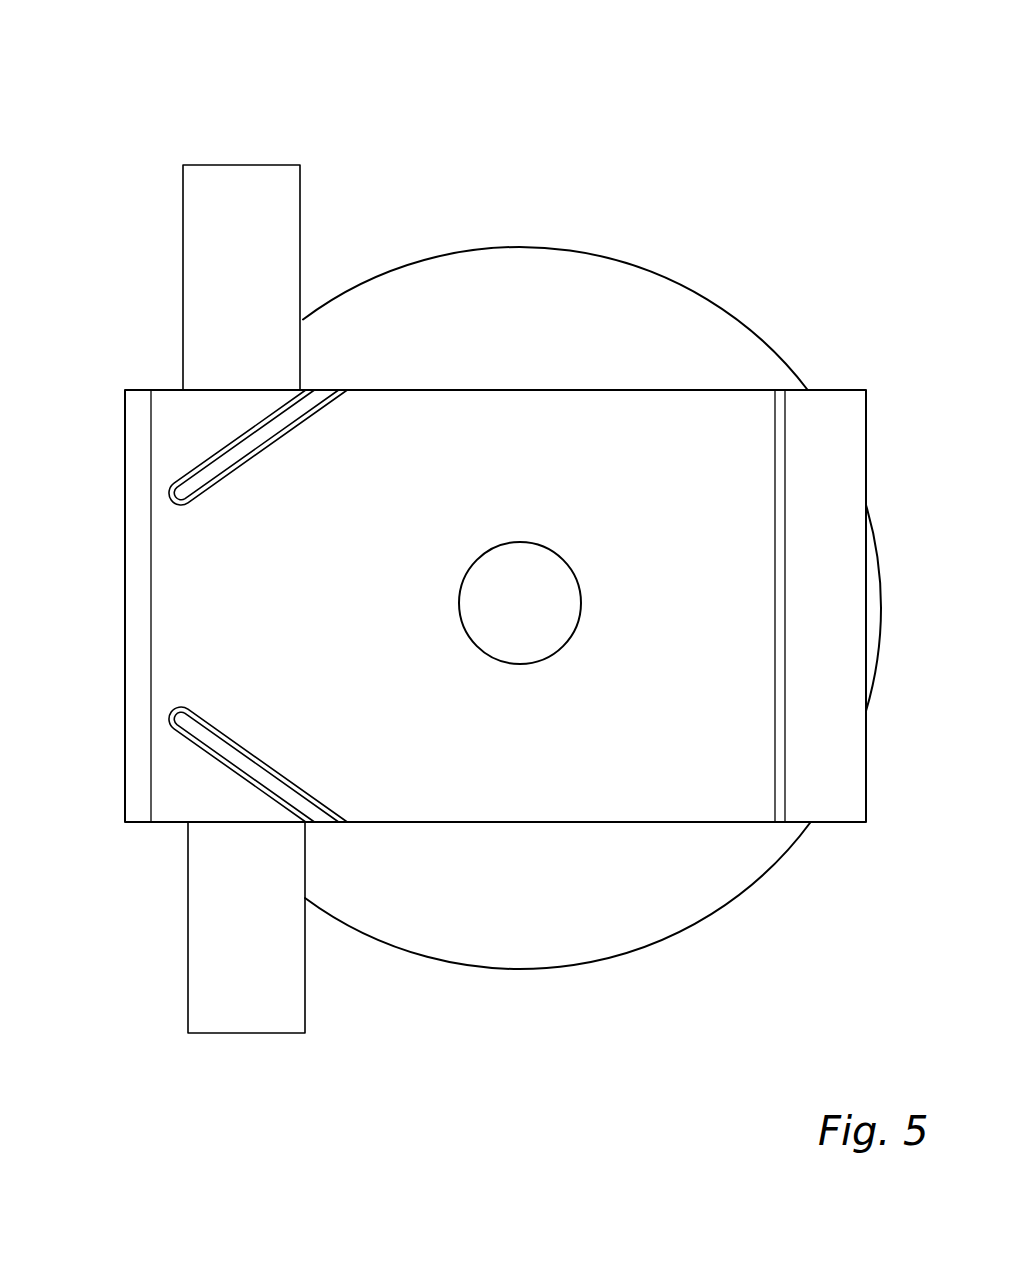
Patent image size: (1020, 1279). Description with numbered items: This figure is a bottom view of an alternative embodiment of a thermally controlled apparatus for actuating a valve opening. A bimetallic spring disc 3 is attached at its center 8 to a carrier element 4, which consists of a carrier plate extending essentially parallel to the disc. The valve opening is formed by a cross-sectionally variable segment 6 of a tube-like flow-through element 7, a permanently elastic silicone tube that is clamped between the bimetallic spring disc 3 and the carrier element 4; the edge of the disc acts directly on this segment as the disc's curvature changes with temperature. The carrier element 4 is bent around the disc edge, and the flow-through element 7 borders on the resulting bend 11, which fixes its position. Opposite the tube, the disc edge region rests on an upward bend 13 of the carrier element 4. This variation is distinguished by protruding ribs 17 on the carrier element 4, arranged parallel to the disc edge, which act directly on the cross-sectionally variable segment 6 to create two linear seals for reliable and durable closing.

The bimetallic spring disc 3 is at (568, 310).
The carrier element 4 is at (437, 440).
The cross-sectionally variable segment 6 is at (238, 735).
The flow-through element 7 is at (242, 190).
The center 8 is at (521, 603).
The bend 11 is at (137, 505).
The upward bend 13 is at (820, 432).
The protruding ribs 17 is at (226, 452).